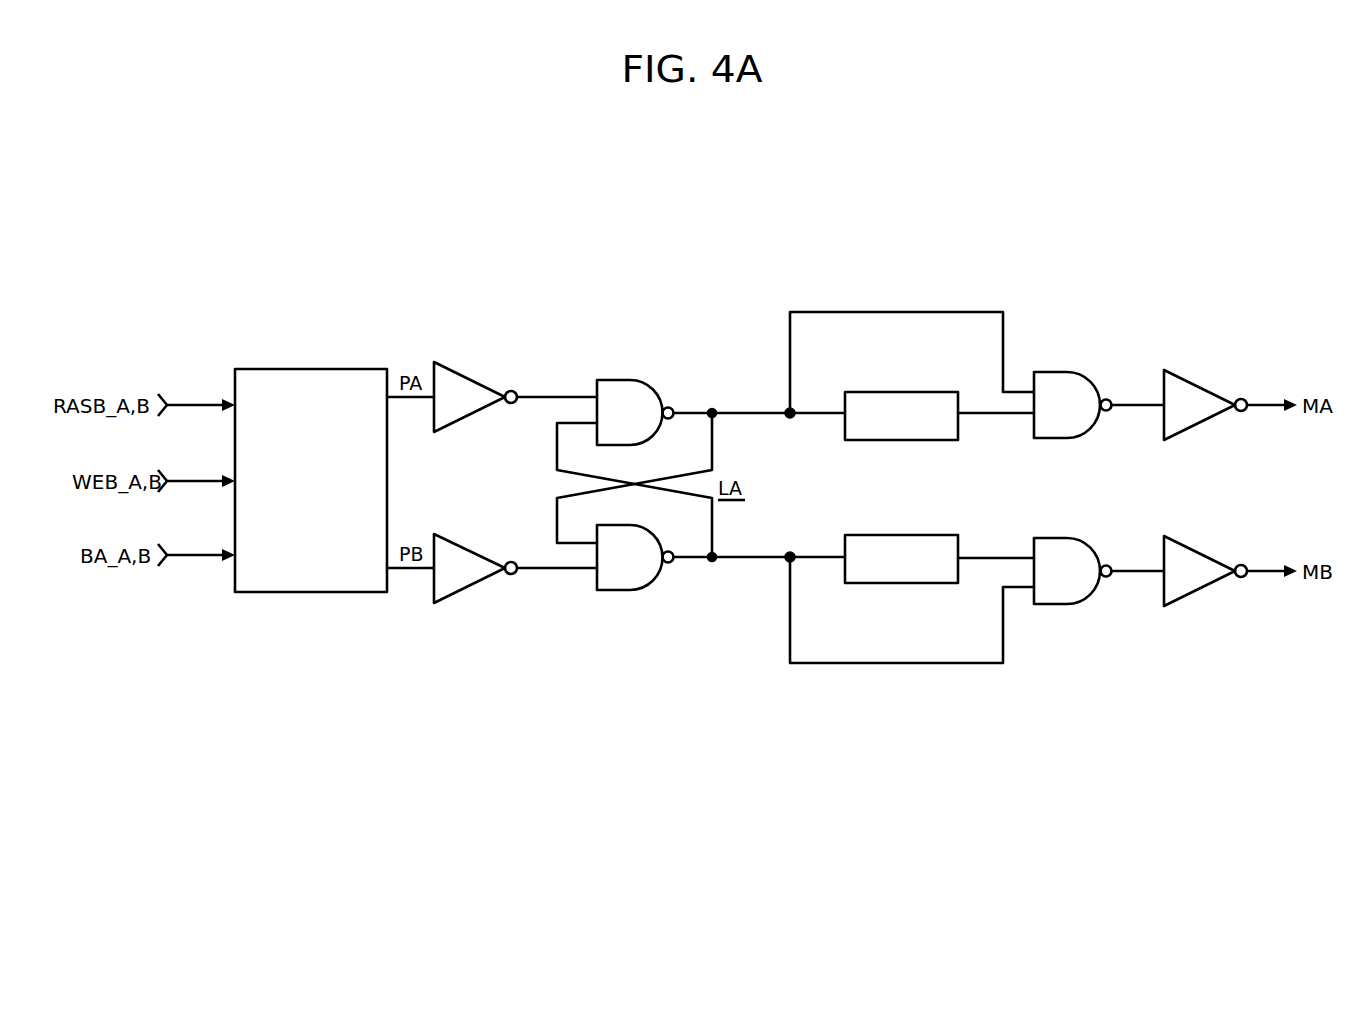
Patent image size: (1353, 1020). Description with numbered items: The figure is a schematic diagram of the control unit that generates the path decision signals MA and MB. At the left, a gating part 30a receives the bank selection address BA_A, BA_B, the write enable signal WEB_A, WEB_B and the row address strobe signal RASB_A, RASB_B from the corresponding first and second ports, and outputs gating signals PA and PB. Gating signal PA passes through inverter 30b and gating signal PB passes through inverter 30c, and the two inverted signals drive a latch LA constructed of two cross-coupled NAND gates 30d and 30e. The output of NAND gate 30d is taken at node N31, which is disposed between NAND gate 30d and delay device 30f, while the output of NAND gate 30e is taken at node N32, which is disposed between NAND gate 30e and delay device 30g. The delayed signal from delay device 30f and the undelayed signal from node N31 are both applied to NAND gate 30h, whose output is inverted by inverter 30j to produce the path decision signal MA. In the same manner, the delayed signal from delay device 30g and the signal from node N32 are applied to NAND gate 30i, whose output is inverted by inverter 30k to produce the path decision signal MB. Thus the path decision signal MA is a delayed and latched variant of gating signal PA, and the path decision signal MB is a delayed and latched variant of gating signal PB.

The gating part 30a is at (322, 369).
The inverter 30b is at (471, 378).
The inverter 30c is at (471, 552).
The NAND gate 30d is at (635, 380).
The NAND gate 30e is at (611, 590).
The delay device 30f is at (904, 390).
The delay device 30g is at (904, 584).
The NAND gate 30h is at (1069, 372).
The NAND gate 30i is at (1068, 604).
The inverter 30j is at (1201, 385).
The inverter 30k is at (1201, 596).
The node N31 is at (791, 418).
The node N32 is at (791, 553).